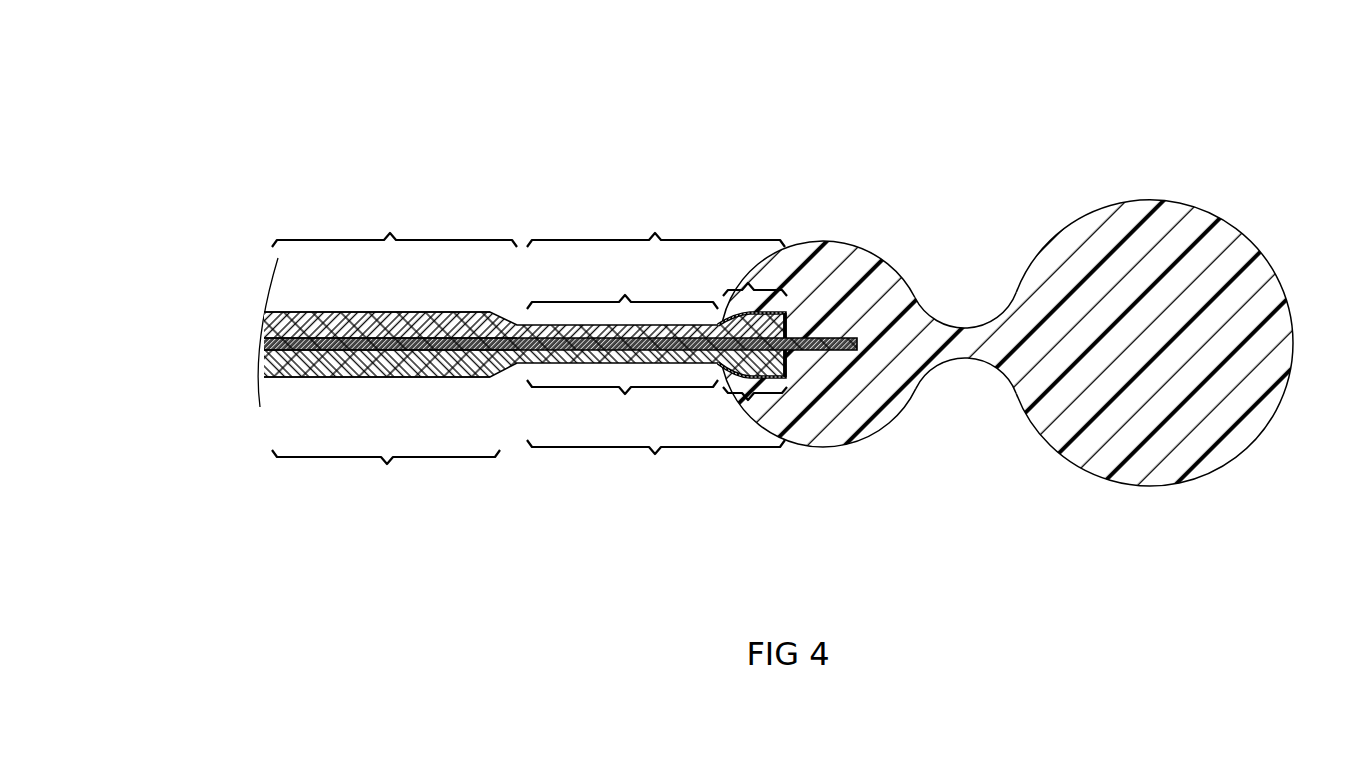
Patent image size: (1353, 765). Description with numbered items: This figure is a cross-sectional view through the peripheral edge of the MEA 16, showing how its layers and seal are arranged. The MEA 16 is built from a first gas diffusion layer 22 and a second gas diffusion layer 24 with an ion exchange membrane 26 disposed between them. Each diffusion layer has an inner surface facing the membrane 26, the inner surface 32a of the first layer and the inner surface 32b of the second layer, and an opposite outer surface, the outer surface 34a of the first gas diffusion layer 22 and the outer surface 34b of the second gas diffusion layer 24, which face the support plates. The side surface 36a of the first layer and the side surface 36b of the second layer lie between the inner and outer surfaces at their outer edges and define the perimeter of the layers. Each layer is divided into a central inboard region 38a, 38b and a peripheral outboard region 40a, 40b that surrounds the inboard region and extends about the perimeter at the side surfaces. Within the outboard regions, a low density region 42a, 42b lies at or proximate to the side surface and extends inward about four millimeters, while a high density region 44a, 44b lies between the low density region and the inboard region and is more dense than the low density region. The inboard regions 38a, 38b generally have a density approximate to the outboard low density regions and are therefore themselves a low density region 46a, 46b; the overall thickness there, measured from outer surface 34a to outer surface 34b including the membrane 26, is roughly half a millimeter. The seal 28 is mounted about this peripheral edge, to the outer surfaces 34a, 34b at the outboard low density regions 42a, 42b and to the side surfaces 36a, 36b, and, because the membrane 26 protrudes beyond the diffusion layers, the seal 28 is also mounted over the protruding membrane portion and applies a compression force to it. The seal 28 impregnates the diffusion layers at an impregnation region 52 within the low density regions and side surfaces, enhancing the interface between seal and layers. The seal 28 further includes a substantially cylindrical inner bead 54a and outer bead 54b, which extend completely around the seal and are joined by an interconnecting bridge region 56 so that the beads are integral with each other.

The MEA 16 is at (290, 82).
The first gas diffusion layer 22 is at (251, 321).
The second gas diffusion layer 24 is at (251, 370).
The ion exchange membrane 26 is at (250, 344).
The seal 28 is at (965, 265).
The inner surface of first diffusion layer 32a is at (388, 337).
The inner surface of second diffusion layer 32b is at (392, 351).
The outer surface of first diffusion layer 34a is at (313, 312).
The outer surface of second diffusion layer 34b is at (327, 378).
The side surface of first diffusion layer 36a is at (790, 323).
The side surface of second diffusion layer 36b is at (791, 354).
The inboard region of first diffusion layer 38a is at (394, 225).
The inboard region of second diffusion layer 38b is at (386, 474).
The outboard region of first diffusion layer 40a is at (656, 225).
The outboard region of second diffusion layer 40b is at (656, 462).
The low density region of first diffusion layer 42a is at (748, 283).
The low density region of second diffusion layer 42b is at (748, 400).
The high density region of first diffusion layer 44a is at (622, 288).
The high density region of second diffusion layer 44b is at (622, 401).
The low density region of inboard region of first diffusion layer 46a is at (394, 225).
The low density region of inboard region of second diffusion layer 46b is at (386, 474).
The impregnation region 52 is at (808, 368).
The inner bead 54a is at (860, 272).
The outer bead 54b is at (1242, 236).
The interconnecting bridge region 56 is at (964, 360).